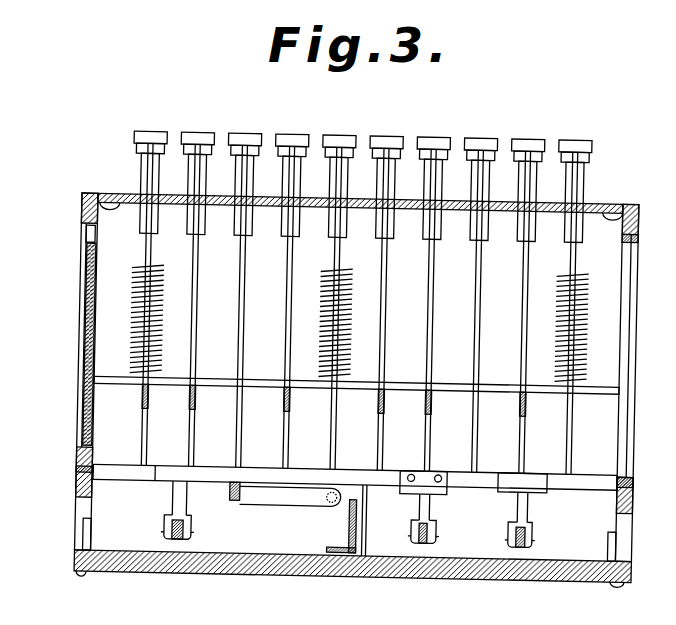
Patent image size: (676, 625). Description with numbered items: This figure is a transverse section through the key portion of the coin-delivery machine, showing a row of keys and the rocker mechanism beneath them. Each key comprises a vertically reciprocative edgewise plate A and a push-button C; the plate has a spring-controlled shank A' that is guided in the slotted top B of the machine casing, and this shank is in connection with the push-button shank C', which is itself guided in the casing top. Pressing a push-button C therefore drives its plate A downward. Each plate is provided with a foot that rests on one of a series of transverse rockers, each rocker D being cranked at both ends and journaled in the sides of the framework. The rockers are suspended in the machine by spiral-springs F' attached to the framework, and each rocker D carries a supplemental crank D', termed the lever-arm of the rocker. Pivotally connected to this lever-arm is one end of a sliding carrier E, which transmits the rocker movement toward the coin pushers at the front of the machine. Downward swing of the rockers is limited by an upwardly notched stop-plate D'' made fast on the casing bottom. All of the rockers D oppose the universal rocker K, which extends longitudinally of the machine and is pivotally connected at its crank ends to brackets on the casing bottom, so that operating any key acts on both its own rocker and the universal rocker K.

The slotted top of the machine casing B is at (103, 188).
The spiral-springs F' is at (57, 343).
The push-button C is at (383, 127).
The push-button shank C' is at (361, 195).
The vertically reciprocative edgewise plate A is at (355, 309).
The spring-controlled shank A' is at (369, 313).
The rocker D is at (354, 488).
The supplemental crank D' is at (160, 509).
The stop-plate D'' is at (327, 519).
The universal rocker K is at (285, 513).
The sliding carrier E is at (190, 538).